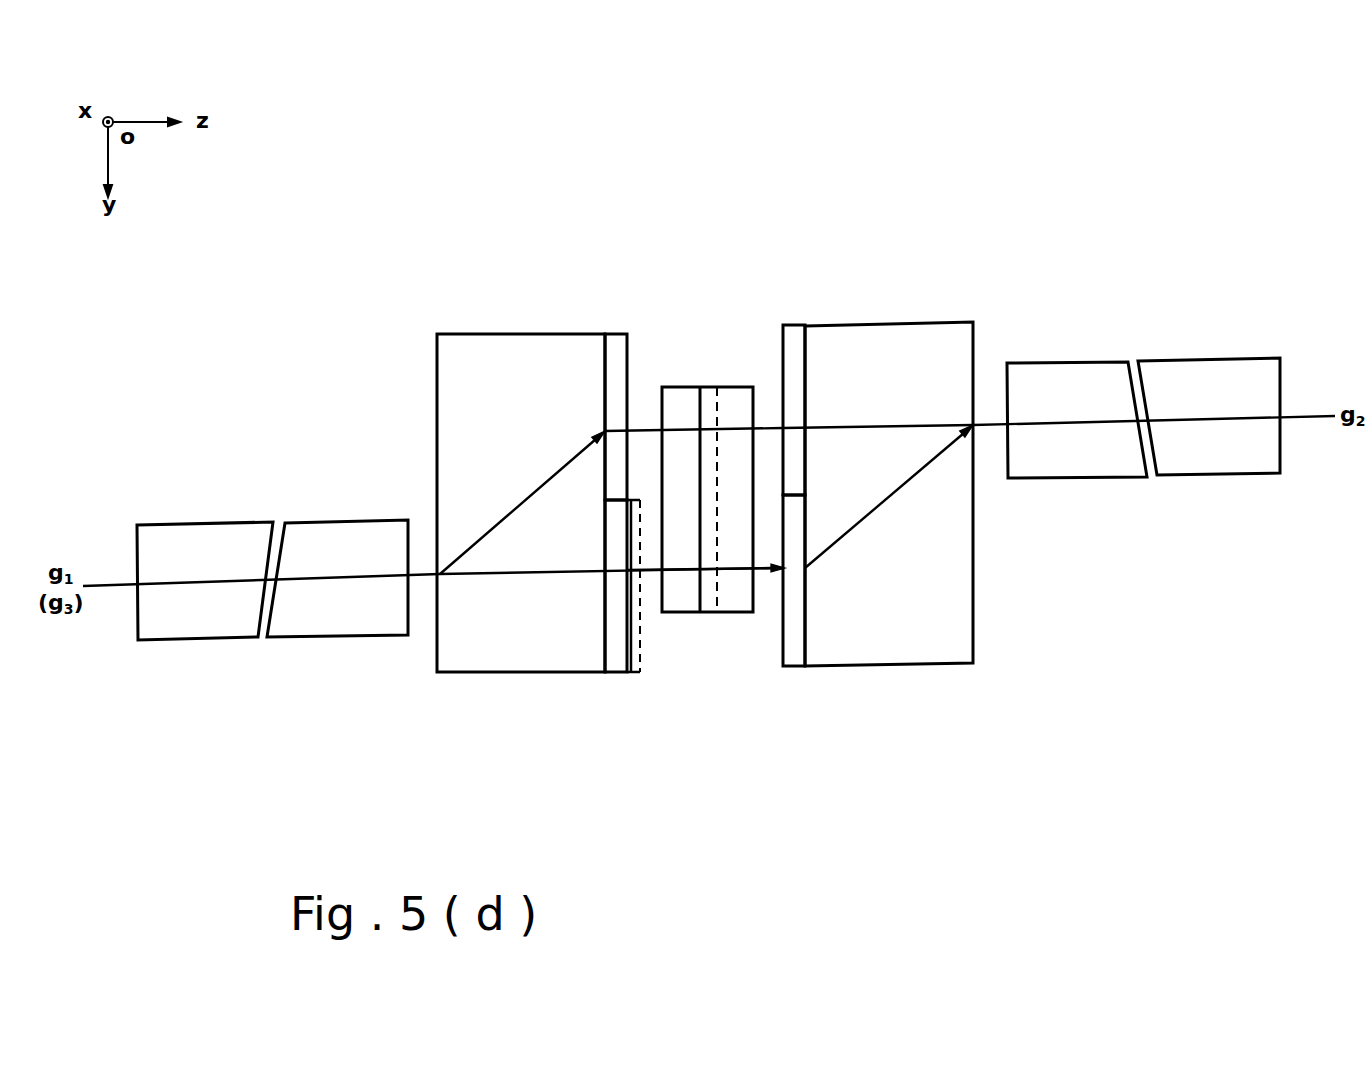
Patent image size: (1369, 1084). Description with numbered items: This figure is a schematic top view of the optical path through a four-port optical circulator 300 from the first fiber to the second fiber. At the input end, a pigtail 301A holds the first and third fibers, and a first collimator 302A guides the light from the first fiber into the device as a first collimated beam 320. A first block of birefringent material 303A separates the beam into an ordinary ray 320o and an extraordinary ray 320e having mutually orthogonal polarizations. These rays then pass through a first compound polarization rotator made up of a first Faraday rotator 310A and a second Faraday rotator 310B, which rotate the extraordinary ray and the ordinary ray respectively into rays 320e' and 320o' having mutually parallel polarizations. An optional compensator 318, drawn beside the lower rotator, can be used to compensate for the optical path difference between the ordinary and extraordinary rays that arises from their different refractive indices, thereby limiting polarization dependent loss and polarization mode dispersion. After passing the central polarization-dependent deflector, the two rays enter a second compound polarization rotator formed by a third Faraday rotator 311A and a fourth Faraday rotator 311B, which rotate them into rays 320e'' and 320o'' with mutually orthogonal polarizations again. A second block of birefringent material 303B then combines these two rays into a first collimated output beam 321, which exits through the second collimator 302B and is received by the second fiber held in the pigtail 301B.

The four-port optical circulator 300 is at (1117, 140).
The pigtail 301A is at (213, 522).
The first collimator 302A is at (333, 520).
The first block of birefringent material 303A is at (495, 333).
The first Faraday rotator 310A is at (612, 333).
The second Faraday rotator 310B is at (618, 675).
The compensator 318 is at (632, 675).
The third Faraday rotator 311A is at (800, 325).
The fourth Faraday rotator 311B is at (795, 668).
The second block of birefringent material 303B is at (930, 325).
The second collimator 302B is at (1047, 362).
The pigtail 301B is at (1200, 360).
The first collimated beam 320 is at (427, 573).
The extraordinary ray 320e is at (522, 499).
The ordinary ray 320o is at (612, 606).
The rotated extraordinary ray 320e' is at (694, 390).
The rotated ordinary ray 320o' is at (705, 627).
The twice-rotated extraordinary ray 320e'' is at (878, 389).
The twice-rotated ordinary ray 320o'' is at (889, 506).
The first collimated output beam 321 is at (993, 423).